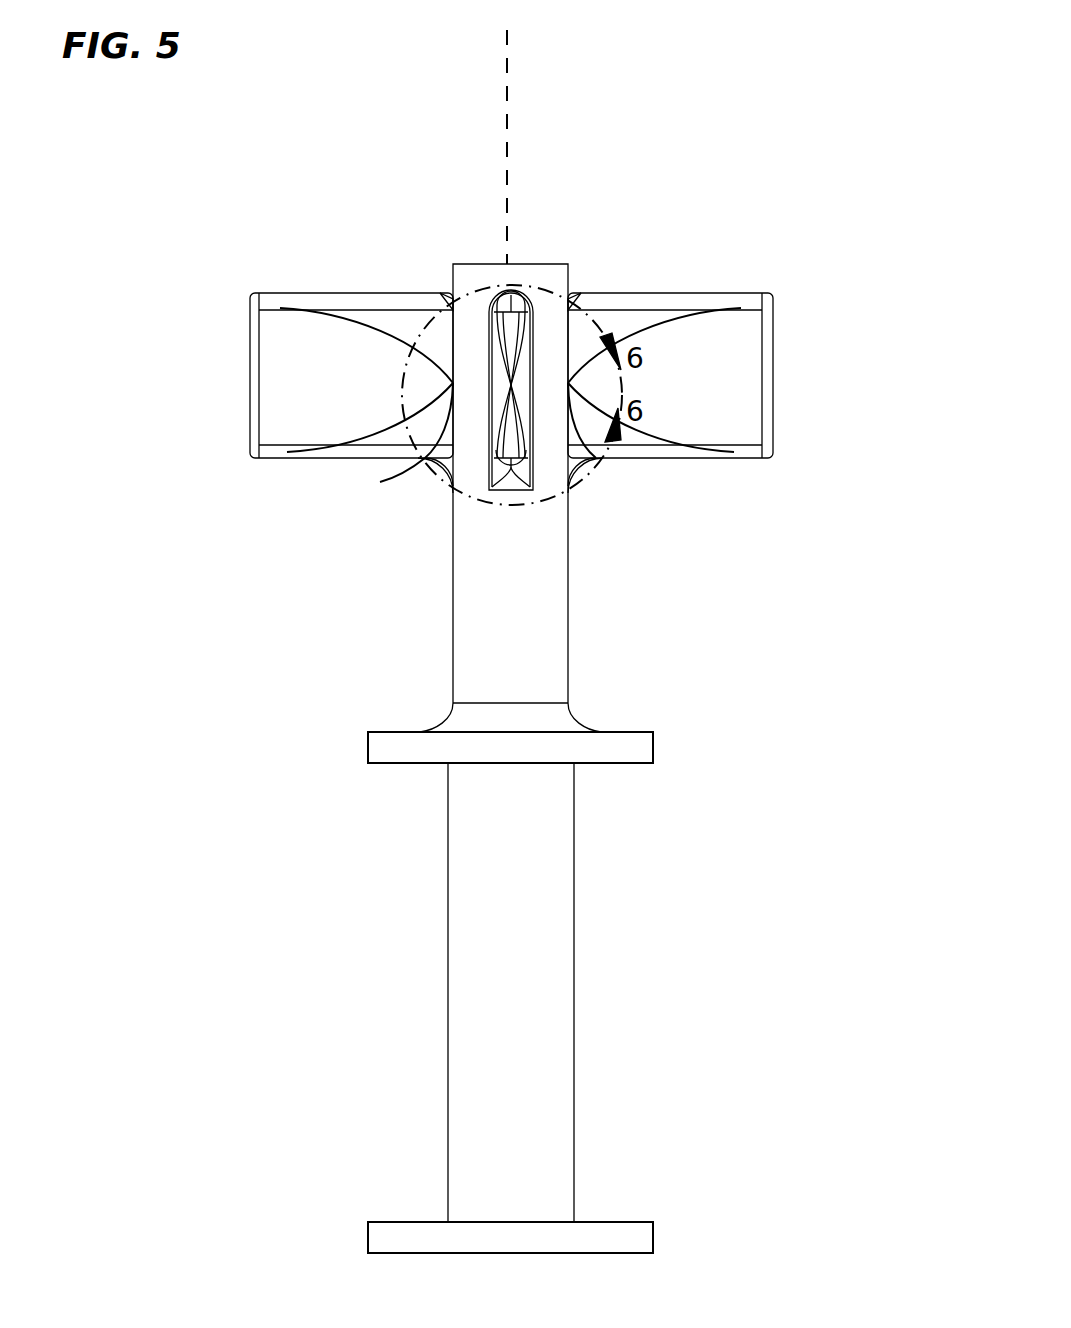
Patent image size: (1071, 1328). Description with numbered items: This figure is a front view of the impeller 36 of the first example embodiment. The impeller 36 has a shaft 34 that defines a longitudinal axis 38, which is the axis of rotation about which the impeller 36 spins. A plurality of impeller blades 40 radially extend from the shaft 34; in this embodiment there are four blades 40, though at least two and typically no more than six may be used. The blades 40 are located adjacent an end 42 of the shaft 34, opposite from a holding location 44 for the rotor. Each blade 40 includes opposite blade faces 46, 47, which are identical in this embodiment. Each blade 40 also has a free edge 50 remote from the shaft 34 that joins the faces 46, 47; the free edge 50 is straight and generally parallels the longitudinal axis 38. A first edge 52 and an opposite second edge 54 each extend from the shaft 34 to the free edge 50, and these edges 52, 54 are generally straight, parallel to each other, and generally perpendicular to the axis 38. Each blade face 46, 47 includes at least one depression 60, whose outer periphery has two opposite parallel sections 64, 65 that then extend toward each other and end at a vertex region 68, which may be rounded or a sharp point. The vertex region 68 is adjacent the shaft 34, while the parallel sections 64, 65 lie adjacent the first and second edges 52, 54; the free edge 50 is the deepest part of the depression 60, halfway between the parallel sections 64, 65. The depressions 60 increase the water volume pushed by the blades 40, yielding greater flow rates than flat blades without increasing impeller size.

The shaft 34 is at (567, 615).
The impeller 36 is at (772, 112).
The longitudinal axis 38 is at (508, 109).
The impeller blade 40 is at (320, 158).
The end of the shaft 42 is at (536, 264).
The holding location 44 is at (575, 1060).
The blade face 46 is at (420, 322).
The blade face 47 is at (693, 196).
The free edge 50 is at (250, 358).
The first edge 52 is at (310, 292).
The second edge 54 is at (312, 462).
The depression 60 is at (283, 399).
The parallel section 64 is at (292, 310).
The parallel section 65 is at (292, 452).
The vertex region 68 is at (427, 460).